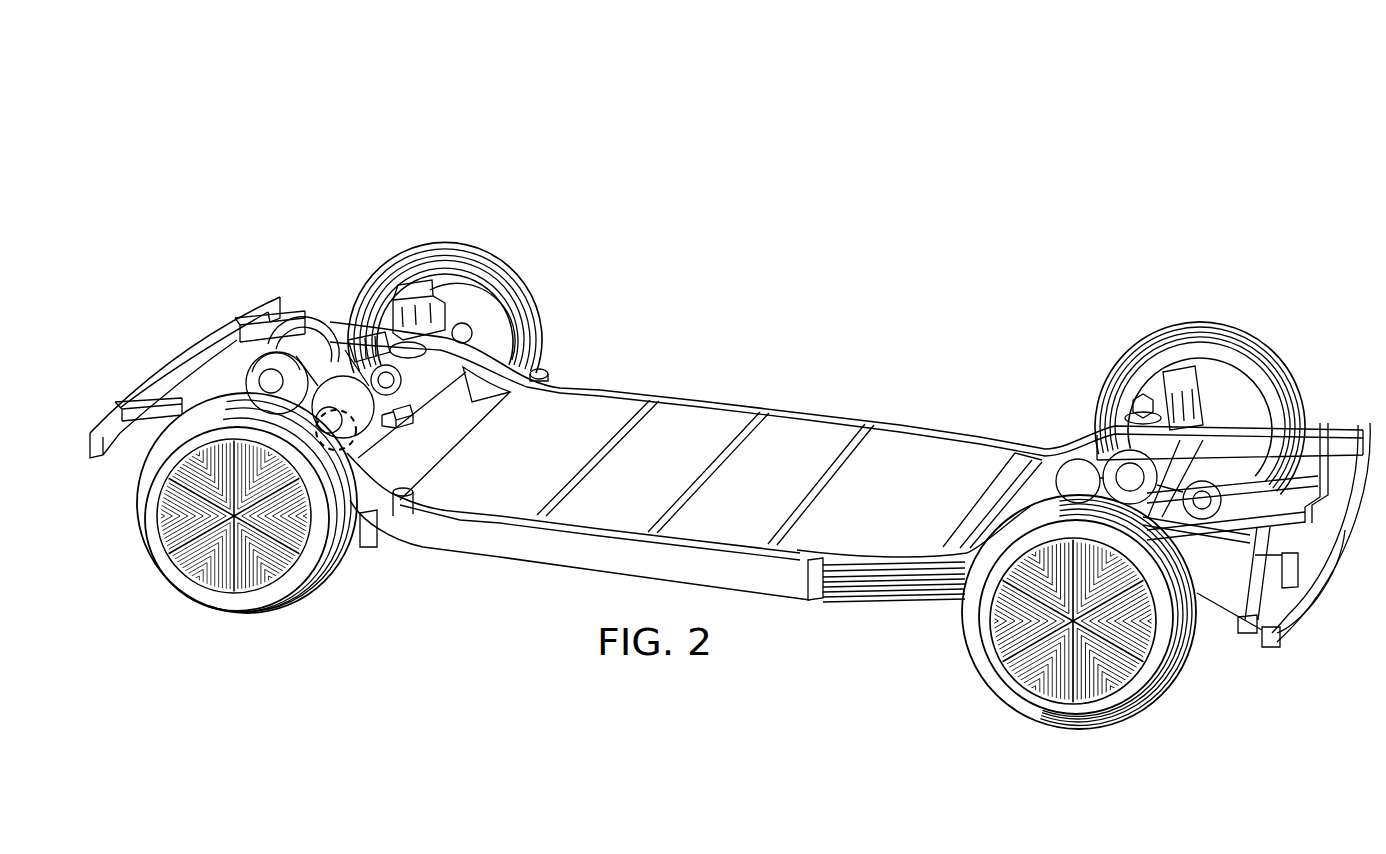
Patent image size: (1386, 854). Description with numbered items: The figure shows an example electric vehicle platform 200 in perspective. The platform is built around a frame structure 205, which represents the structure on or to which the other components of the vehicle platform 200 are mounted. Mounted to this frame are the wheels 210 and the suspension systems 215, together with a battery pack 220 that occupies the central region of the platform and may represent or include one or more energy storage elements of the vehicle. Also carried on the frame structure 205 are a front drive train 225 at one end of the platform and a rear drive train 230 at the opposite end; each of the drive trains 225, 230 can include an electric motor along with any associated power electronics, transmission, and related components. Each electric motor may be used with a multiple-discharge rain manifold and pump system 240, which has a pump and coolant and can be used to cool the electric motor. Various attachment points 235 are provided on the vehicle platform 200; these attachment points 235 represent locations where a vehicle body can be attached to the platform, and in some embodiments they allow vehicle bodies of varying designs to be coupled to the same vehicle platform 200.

The vehicle platform 200 is at (606, 125).
The frame structure 205 is at (1343, 427).
The wheels 210 is at (1200, 322).
The suspension systems 215 is at (427, 290).
The battery pack 220 is at (805, 430).
The front drive train 225 is at (1065, 462).
The rear drive train 230 is at (333, 393).
The attachment points 235 is at (400, 510).
The multiple-discharge rain manifold and pump system 240 is at (395, 442).